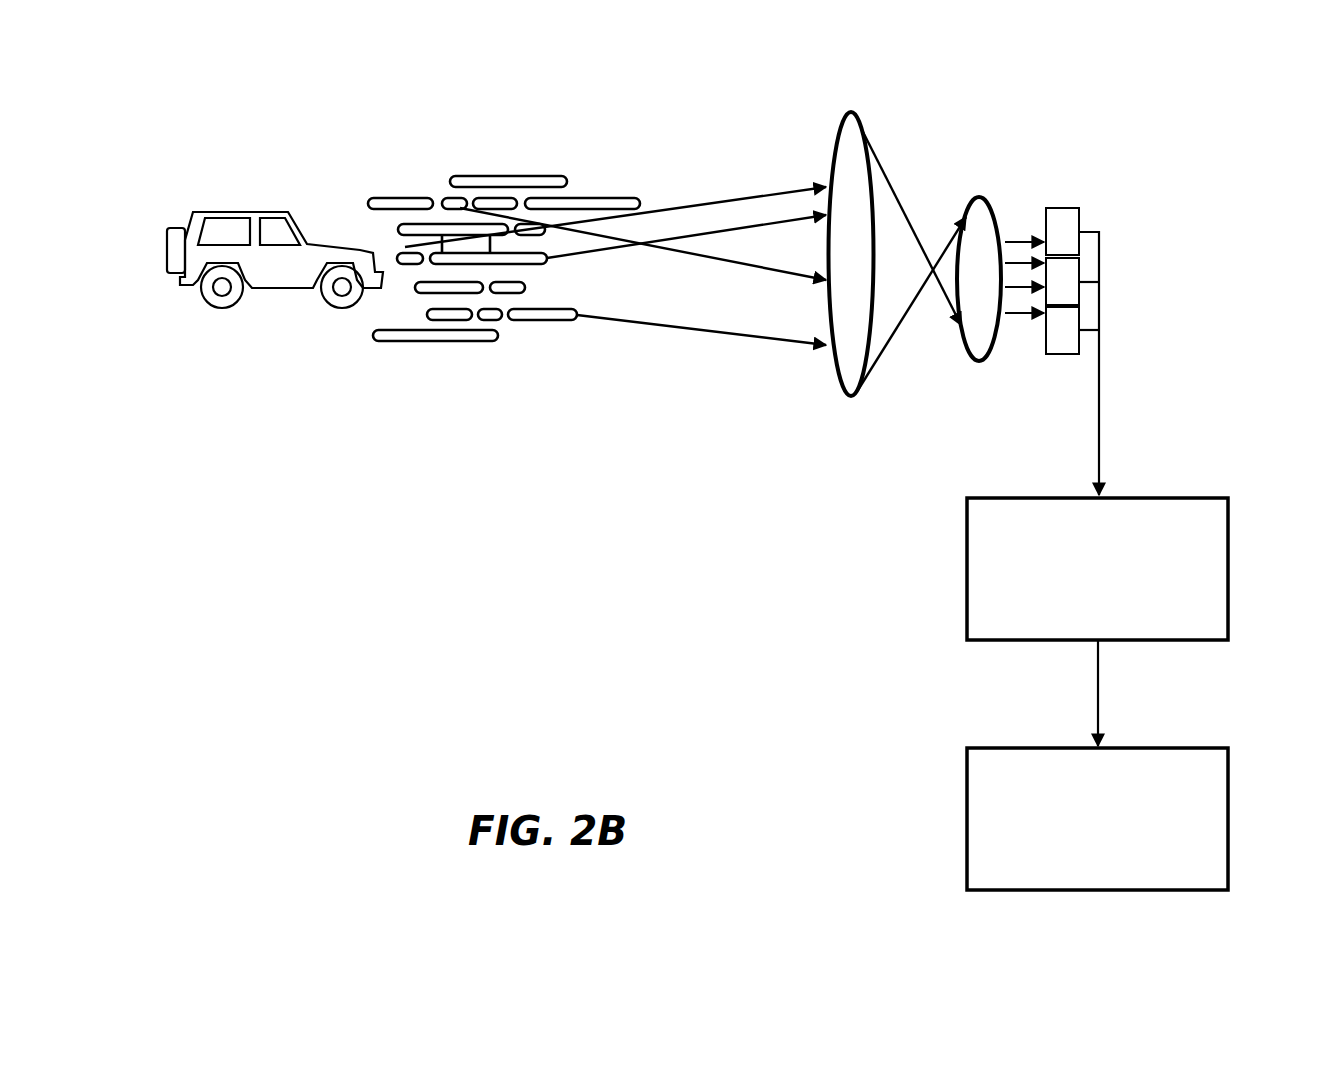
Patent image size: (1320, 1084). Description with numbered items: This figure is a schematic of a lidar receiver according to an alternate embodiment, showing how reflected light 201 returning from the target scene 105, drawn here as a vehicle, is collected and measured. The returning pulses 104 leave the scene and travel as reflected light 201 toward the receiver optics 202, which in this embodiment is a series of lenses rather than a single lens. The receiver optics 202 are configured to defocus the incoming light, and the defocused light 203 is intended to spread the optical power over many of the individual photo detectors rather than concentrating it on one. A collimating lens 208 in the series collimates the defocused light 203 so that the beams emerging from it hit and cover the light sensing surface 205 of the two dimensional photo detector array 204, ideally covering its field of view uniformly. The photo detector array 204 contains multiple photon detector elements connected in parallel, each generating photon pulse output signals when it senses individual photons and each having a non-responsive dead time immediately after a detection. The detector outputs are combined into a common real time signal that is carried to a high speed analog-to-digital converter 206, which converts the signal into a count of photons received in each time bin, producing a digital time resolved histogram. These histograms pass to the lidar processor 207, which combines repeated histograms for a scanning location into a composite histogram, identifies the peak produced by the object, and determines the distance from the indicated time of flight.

The target scene 105 is at (232, 211).
The reflected laser pulses 104 is at (538, 413).
The reflected light 201 is at (672, 203).
The receiver optics 202 is at (977, 198).
The defocused light 203 is at (952, 307).
The photo detector array 204 is at (1062, 208).
The light sensing surface 205 is at (1047, 350).
The collimating lens 208 is at (983, 363).
The analog-to-digital converter 206 is at (1121, 613).
The lidar processor 207 is at (1121, 863).